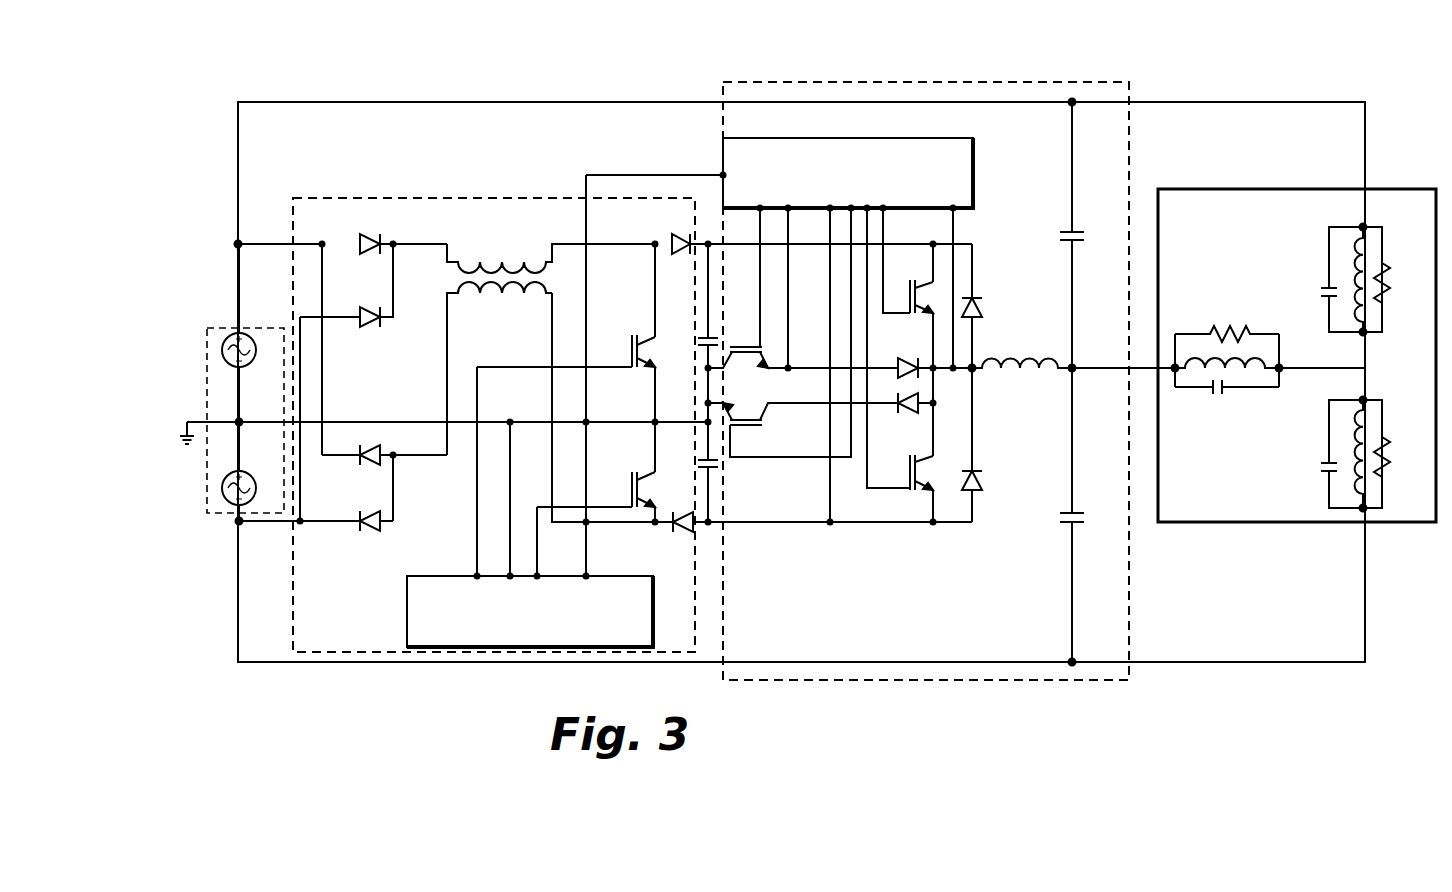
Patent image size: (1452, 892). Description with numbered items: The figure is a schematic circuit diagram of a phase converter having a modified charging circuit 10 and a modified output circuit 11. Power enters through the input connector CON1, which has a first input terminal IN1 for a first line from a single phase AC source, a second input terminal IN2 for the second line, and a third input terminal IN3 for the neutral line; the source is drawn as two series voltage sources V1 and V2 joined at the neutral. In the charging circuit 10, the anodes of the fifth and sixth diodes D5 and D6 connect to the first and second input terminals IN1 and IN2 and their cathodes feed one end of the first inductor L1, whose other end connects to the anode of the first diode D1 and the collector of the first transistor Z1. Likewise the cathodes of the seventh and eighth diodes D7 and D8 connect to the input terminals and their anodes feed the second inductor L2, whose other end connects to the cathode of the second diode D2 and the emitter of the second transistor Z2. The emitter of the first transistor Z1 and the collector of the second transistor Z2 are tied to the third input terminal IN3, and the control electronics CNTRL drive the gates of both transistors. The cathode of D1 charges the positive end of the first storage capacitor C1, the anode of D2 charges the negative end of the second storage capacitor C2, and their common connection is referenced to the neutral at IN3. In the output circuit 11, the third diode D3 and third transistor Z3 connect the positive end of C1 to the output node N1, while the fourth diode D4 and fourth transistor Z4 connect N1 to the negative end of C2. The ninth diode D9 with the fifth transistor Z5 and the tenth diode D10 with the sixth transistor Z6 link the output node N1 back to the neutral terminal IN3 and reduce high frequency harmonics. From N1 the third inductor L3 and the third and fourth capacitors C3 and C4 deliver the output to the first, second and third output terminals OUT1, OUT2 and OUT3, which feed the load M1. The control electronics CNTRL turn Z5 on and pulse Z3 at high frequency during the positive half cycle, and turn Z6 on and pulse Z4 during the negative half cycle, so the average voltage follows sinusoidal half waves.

The charging circuit 10 is at (558, 197).
The output circuit 11 is at (790, 80).
The input connector CON1 is at (205, 382).
The AC voltage source 1 V1 is at (248, 333).
The AC voltage source 2 V2 is at (248, 471).
The first input terminal IN1 is at (216, 284).
The second input terminal IN2 is at (211, 535).
The third input terminal IN3 is at (260, 412).
The fifth diode D5 is at (367, 230).
The sixth diode D6 is at (367, 302).
The seventh diode D7 is at (366, 473).
The eighth diode D8 is at (367, 539).
The first inductor L1 is at (551, 250).
The second inductor L2 is at (499, 368).
The third inductor L3 is at (1022, 349).
The first transistor Z1 is at (566, 350).
The second transistor Z2 is at (596, 489).
The third transistor Z3 is at (912, 283).
The fourth transistor Z4 is at (902, 472).
The fifth transistor Z5 is at (747, 342).
The sixth transistor Z6 is at (743, 429).
The first diode D1 is at (678, 230).
The second diode D2 is at (669, 538).
The third diode D3 is at (991, 308).
The fourth diode D4 is at (992, 482).
The ninth diode D9 is at (905, 354).
The tenth diode D10 is at (903, 422).
The first storage capacitor C1 is at (689, 348).
The second storage capacitor C2 is at (723, 482).
The third capacitor C3 is at (1090, 245).
The fourth capacitor C4 is at (1053, 526).
The output node N1 is at (989, 385).
The first output terminal OUT1 is at (1037, 118).
The second output terminal OUT2 is at (1036, 649).
The third output terminal OUT3 is at (1108, 383).
The control electronics CNTRL is at (690, 392).
The load (motor) M1 is at (1297, 355).